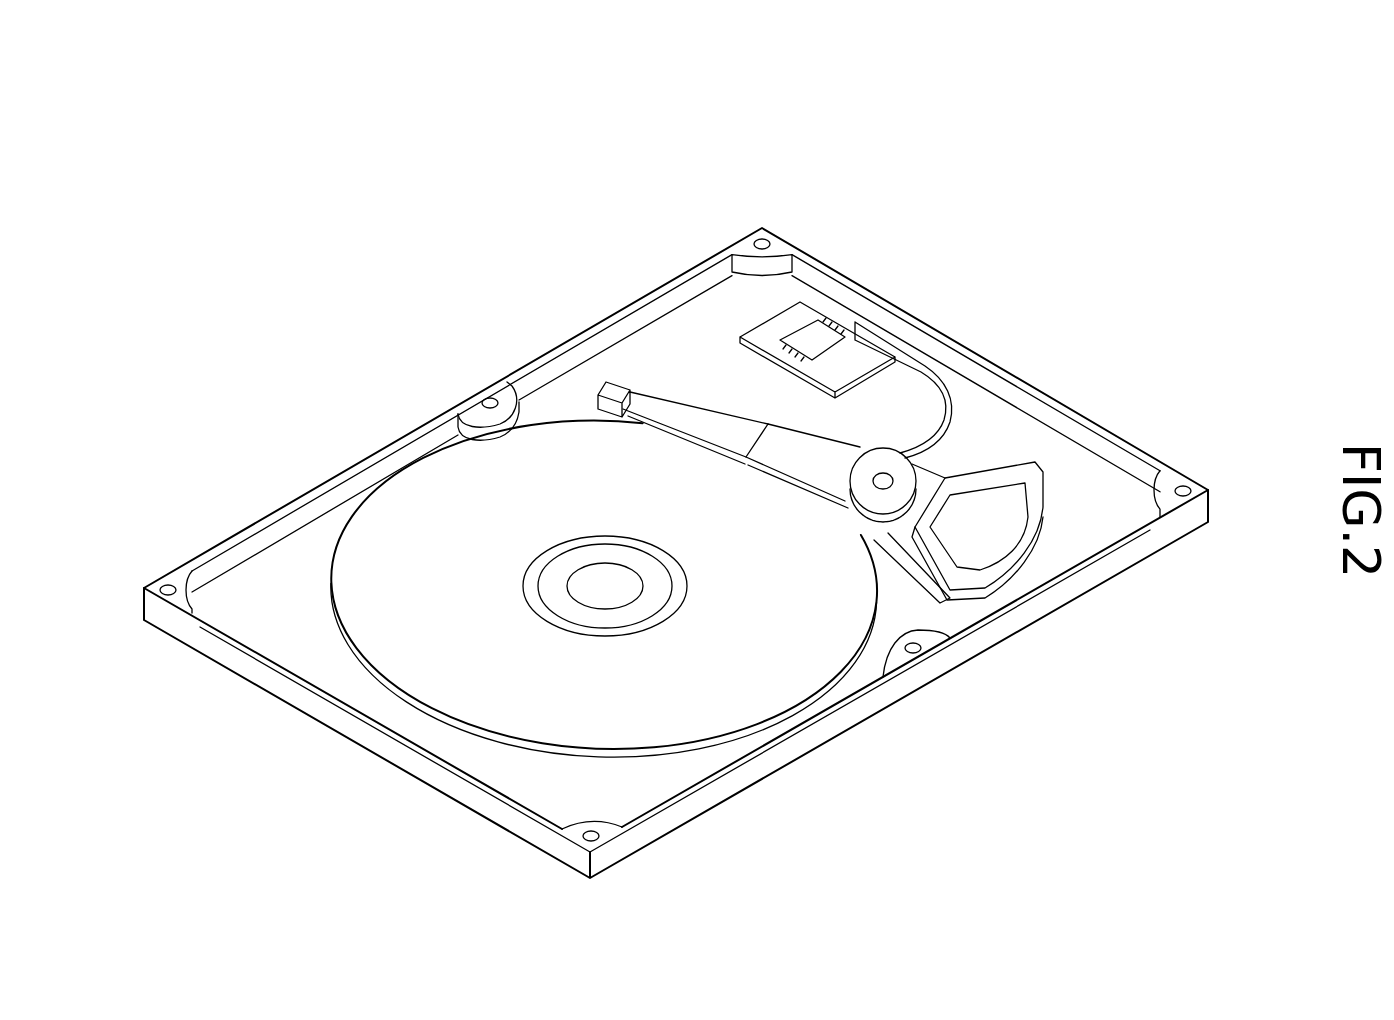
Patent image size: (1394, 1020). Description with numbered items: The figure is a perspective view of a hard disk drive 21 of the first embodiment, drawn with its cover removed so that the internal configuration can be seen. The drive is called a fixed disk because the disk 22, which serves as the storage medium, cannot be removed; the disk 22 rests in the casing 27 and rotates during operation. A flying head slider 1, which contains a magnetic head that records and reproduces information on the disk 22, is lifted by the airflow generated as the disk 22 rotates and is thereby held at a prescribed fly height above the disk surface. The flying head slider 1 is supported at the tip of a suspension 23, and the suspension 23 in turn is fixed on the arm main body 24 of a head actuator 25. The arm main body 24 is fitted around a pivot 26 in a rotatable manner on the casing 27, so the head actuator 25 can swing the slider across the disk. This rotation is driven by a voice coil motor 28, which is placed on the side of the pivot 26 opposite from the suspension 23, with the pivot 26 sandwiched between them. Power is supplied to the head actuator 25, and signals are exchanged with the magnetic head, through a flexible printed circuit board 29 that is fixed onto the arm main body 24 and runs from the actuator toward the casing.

The flying head slider 1 is at (600, 400).
The hard disk drive 21 is at (717, 200).
The disk 22 is at (460, 685).
The suspension 23 is at (688, 413).
The arm main body 24 is at (830, 457).
The head actuator 25 is at (951, 436).
The pivot 26 is at (897, 481).
The casing 27 is at (230, 620).
The voice coil motor 28 is at (1013, 550).
The flexible printed circuit board 29 is at (940, 372).